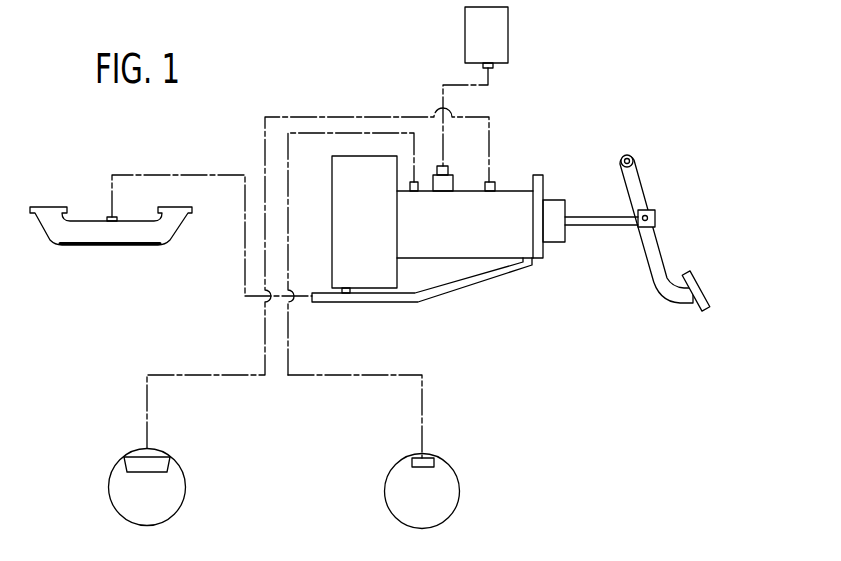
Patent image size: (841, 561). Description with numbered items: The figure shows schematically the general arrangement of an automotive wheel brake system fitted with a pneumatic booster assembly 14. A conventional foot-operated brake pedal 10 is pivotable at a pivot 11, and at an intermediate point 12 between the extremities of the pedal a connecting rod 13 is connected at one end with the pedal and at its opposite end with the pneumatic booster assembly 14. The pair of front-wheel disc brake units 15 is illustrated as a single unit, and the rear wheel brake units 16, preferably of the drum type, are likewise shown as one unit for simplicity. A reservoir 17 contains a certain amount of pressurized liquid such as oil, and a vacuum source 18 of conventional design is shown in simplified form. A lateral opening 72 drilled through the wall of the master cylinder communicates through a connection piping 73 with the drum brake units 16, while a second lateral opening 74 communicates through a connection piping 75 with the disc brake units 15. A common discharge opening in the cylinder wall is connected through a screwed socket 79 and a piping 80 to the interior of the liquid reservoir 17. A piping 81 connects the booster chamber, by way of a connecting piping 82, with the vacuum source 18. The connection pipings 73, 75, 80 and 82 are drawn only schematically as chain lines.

The brake pedal 10 is at (704, 285).
The pivot 11 is at (626, 155).
The intermediate point 12 is at (656, 218).
The connecting rod 13 is at (596, 216).
The pneumatic booster assembly 14 is at (549, 258).
The disc brake units 15 is at (185, 489).
The rear wheel brake units 16 is at (460, 491).
The reservoir 17 is at (508, 37).
The vacuum source 18 is at (117, 246).
The lateral opening 72 is at (417, 178).
The connection piping 73 is at (349, 373).
The second lateral opening 74 is at (495, 182).
The connection piping 75 is at (322, 116).
The screwed socket 79 is at (453, 175).
The piping 80 is at (440, 92).
The piping 81 is at (448, 294).
The connecting piping 82 is at (181, 174).